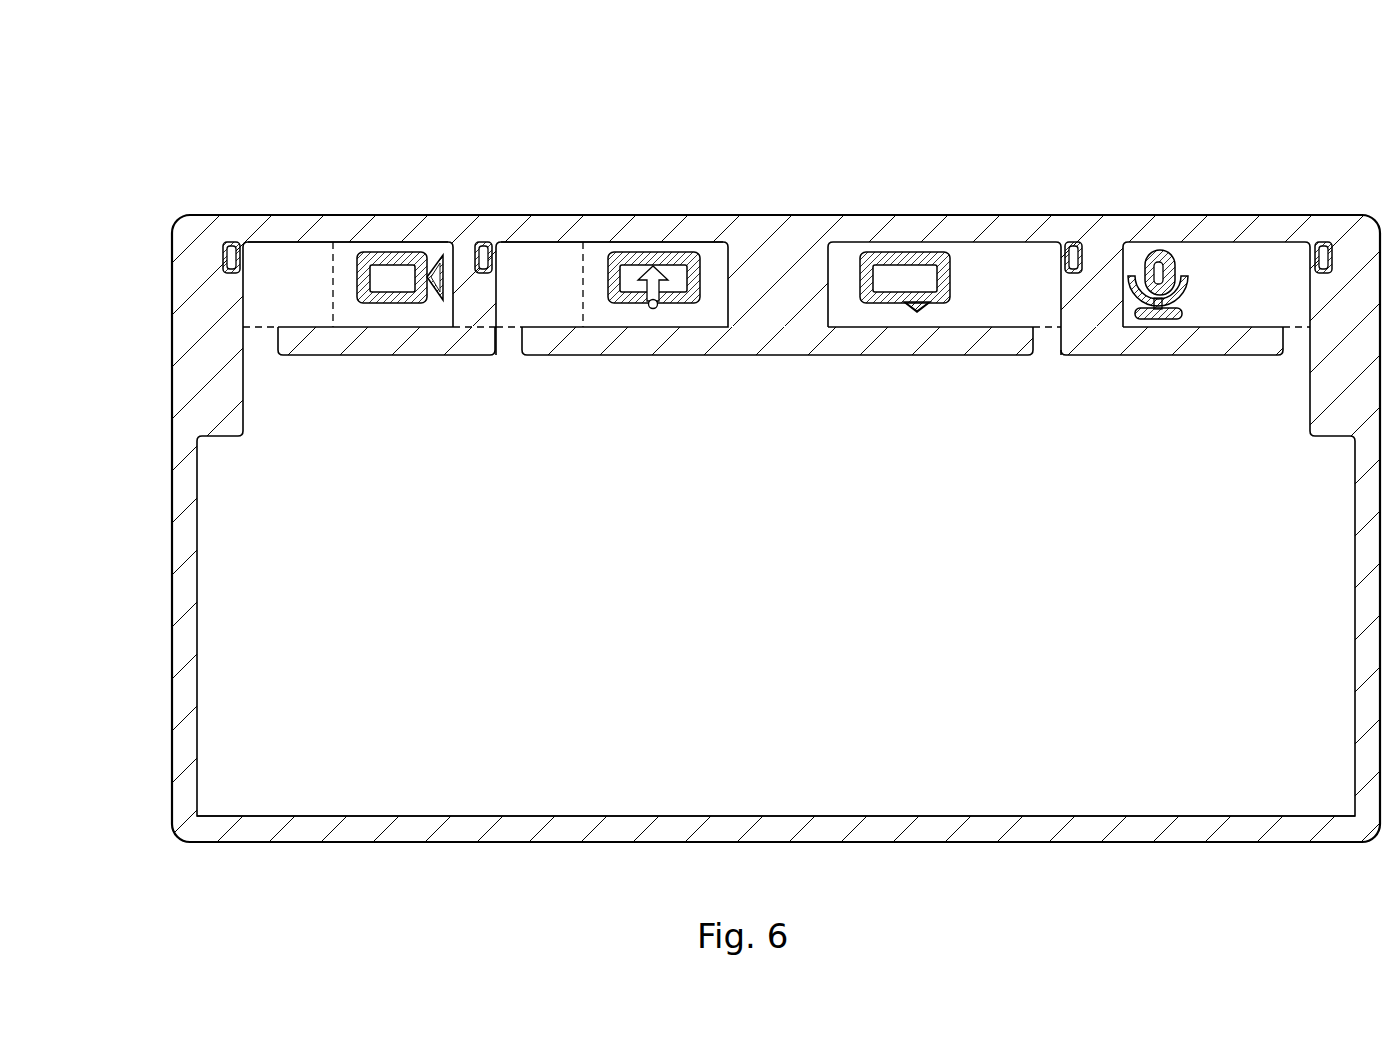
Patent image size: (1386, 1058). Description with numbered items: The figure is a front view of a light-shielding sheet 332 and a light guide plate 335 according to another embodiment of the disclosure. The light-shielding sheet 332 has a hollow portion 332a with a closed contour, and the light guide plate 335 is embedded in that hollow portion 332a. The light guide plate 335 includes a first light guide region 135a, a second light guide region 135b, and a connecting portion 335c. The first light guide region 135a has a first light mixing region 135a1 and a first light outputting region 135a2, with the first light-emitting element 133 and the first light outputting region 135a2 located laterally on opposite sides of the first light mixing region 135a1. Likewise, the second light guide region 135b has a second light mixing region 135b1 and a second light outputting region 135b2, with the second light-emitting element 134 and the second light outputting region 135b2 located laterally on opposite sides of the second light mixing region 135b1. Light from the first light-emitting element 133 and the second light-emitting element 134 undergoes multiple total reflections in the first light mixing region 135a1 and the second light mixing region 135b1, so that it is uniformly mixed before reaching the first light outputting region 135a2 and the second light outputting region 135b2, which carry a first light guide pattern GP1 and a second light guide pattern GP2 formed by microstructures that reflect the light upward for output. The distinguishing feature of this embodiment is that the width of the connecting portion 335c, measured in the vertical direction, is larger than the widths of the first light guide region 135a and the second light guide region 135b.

The first light-emitting element 133 is at (229, 242).
The second light-emitting element 134 is at (482, 243).
The first light guide region 135a is at (417, 93).
The first light mixing region 135a1 is at (312, 245).
The first light outputting region 135a2 is at (343, 245).
The second light guide region 135b is at (682, 93).
The second light mixing region 135b1 is at (565, 245).
The second light outputting region 135b2 is at (597, 245).
The first light guide pattern GP1 is at (395, 251).
The second light guide pattern GP2 is at (685, 251).
The light-shielding sheet 332 is at (187, 370).
The hollow portion 332a is at (198, 570).
The light guide plate 335 is at (997, 271).
The connecting portion 335c is at (456, 708).